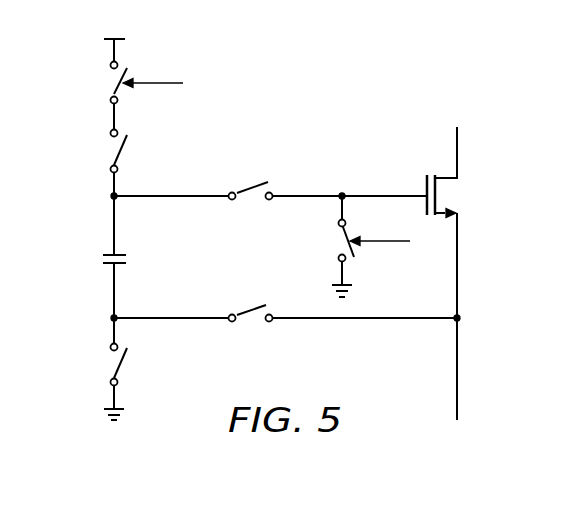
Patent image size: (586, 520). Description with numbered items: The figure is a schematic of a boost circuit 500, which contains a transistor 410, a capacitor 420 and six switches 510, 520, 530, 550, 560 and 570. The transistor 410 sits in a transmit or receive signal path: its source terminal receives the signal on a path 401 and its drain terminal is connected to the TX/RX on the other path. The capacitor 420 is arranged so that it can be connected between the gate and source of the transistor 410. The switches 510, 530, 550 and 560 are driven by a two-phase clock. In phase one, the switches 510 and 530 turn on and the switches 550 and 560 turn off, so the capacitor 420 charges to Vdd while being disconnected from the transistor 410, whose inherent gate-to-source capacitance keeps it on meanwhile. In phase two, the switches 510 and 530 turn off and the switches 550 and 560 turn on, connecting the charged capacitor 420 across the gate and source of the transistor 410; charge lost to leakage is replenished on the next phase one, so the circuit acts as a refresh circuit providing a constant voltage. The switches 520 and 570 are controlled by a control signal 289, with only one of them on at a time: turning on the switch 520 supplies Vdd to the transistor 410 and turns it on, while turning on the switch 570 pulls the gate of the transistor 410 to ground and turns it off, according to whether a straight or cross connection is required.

The boost circuit 500 is at (318, 68).
The switch 520 is at (117, 90).
The switch 510 is at (121, 151).
The switch 550 is at (252, 187).
The switch 560 is at (252, 310).
The switch 570 is at (340, 236).
The switch 530 is at (121, 364).
The capacitor 420 is at (103, 258).
The transistor 410 is at (426, 185).
The path 401 is at (458, 368).
The control signal 289 is at (162, 83).